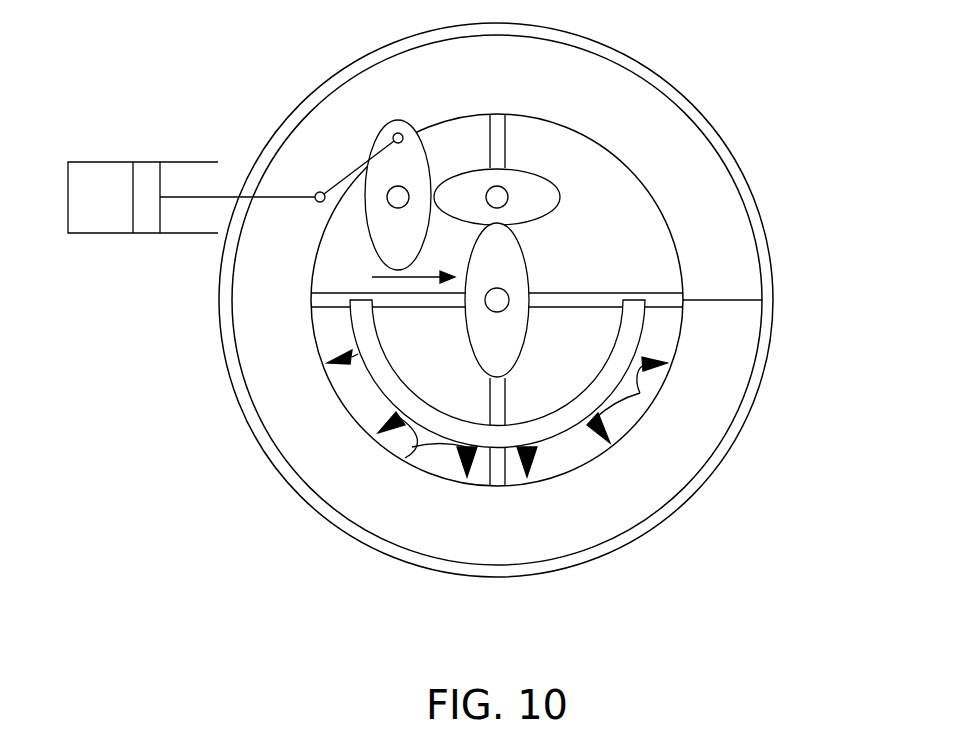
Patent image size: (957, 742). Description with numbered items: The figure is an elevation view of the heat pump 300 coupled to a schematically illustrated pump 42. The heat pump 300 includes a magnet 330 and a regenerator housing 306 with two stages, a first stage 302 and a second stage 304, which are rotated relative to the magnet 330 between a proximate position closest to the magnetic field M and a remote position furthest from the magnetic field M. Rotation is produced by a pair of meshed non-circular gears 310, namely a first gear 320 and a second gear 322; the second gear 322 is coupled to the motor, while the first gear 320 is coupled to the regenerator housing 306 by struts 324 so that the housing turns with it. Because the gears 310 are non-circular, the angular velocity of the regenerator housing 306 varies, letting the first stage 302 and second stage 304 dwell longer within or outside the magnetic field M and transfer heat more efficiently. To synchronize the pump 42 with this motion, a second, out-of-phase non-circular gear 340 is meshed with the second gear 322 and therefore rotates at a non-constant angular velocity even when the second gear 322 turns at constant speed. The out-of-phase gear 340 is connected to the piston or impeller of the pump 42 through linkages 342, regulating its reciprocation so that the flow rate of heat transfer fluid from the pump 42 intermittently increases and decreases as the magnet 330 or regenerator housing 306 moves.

The heat pump 300 is at (717, 77).
The first stage 302 is at (703, 163).
The second stage 304 is at (268, 397).
The regenerator housing 306 is at (770, 240).
The non-circular gears 310 is at (389, 277).
The first gear 320 is at (515, 272).
The second gear 322 is at (540, 195).
The struts 324 is at (597, 300).
The magnet 330 is at (383, 377).
The second, out-of-phase non-circular gear 340 is at (413, 153).
The linkages 342 is at (293, 197).
The pump 42 is at (103, 162).
The magnetic field M is at (405, 458).